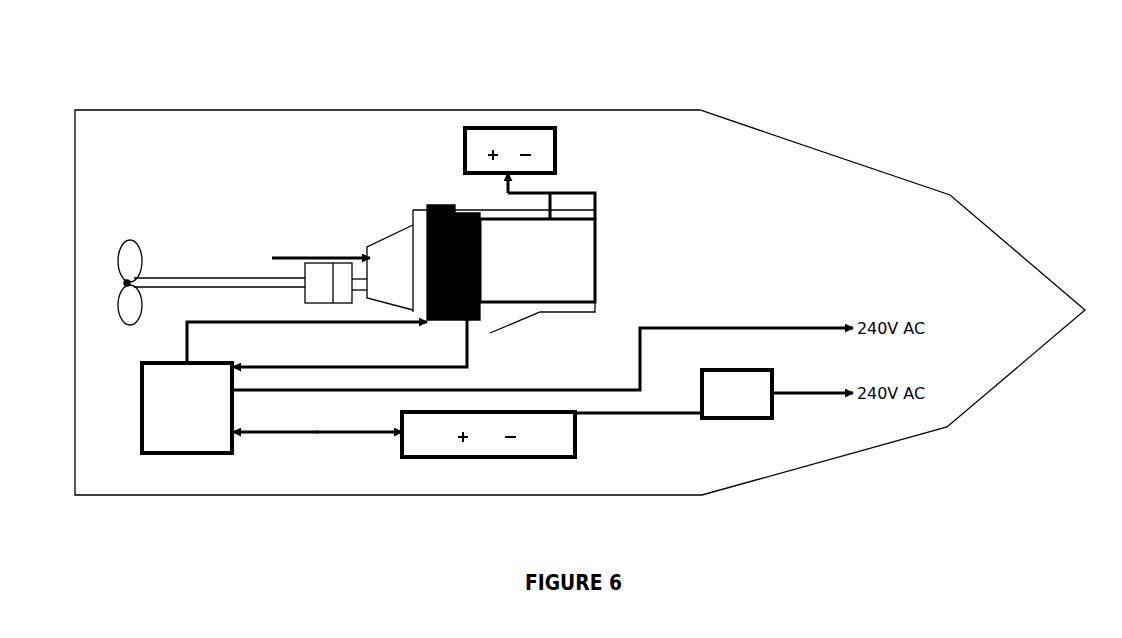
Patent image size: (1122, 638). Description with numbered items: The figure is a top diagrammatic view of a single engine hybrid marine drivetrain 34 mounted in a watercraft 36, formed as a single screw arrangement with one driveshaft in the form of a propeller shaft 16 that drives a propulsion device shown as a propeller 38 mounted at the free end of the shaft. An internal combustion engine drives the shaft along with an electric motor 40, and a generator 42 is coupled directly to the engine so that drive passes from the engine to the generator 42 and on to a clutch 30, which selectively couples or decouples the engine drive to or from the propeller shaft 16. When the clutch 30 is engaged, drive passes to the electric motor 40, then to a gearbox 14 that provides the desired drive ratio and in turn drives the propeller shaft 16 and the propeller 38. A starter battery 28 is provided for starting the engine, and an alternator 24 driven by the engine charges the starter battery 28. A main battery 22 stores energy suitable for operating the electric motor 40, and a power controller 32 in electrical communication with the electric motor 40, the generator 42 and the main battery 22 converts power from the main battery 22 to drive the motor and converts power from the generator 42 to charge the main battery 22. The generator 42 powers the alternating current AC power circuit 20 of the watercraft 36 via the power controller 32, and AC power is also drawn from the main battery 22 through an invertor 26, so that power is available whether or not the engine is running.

The gearbox 14 is at (311, 252).
The propeller shaft 16 is at (192, 278).
The AC power circuit 20 is at (588, 263).
The main battery 22 is at (555, 428).
The alternator 24 is at (595, 210).
The invertor 26 is at (733, 405).
The starter battery 28 is at (508, 128).
The clutch 30 is at (437, 203).
The power controller 32 is at (167, 417).
The hybrid marine drivetrain 34 is at (648, 95).
The watercraft 36 is at (773, 476).
The propeller 38 is at (124, 280).
The electric motor 40 is at (421, 235).
The generator 42 is at (469, 326).